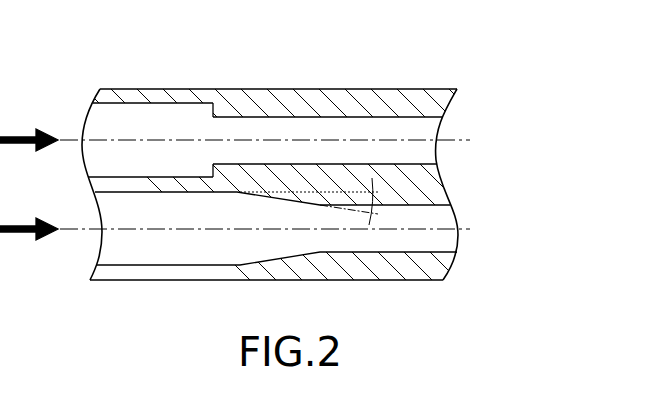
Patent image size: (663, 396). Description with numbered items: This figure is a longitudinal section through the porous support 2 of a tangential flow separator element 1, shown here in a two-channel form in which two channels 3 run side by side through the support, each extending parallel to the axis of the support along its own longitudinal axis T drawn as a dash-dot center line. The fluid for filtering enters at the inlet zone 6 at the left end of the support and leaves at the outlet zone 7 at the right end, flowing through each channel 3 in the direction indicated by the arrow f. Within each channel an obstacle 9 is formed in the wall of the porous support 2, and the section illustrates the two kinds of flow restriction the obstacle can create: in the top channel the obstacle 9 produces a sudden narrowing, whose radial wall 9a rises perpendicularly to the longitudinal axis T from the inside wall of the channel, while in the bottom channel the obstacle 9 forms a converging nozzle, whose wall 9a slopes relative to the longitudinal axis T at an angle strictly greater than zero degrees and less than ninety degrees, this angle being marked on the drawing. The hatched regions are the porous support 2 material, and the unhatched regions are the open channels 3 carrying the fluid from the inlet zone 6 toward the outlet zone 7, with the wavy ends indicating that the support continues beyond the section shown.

The tangential flow separator element 1 is at (374, 184).
The porous support 2 is at (347, 103).
The channel 3 is at (407, 128).
The inlet zone 6 is at (95, 257).
The outlet zone 7 is at (468, 252).
The obstacle 9 is at (213, 102).
The wall 9a is at (208, 112).
The longitudinal axis T is at (458, 140).
The arrow (flow direction) f is at (29, 174).